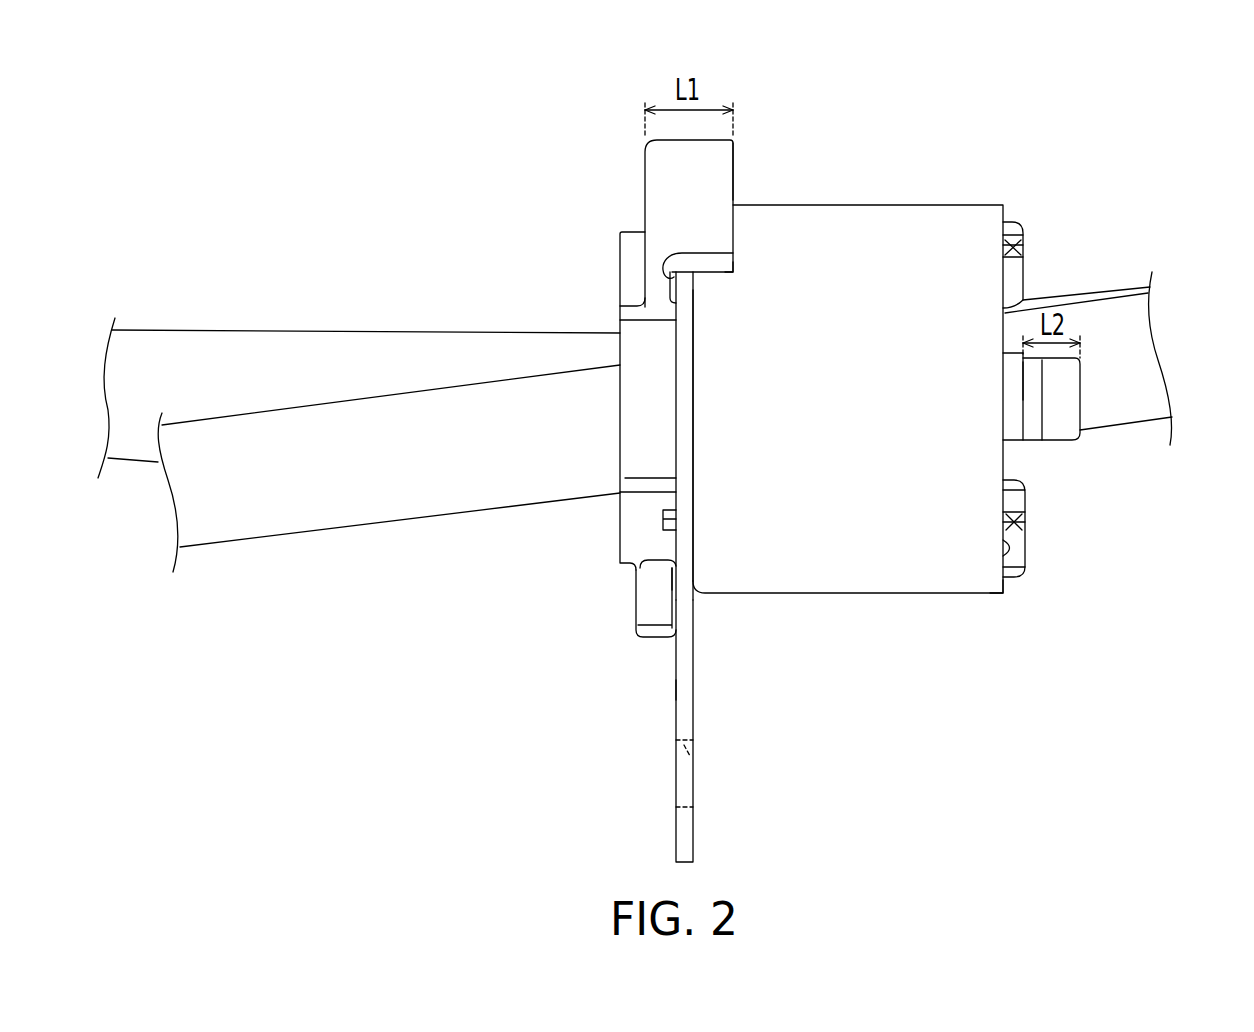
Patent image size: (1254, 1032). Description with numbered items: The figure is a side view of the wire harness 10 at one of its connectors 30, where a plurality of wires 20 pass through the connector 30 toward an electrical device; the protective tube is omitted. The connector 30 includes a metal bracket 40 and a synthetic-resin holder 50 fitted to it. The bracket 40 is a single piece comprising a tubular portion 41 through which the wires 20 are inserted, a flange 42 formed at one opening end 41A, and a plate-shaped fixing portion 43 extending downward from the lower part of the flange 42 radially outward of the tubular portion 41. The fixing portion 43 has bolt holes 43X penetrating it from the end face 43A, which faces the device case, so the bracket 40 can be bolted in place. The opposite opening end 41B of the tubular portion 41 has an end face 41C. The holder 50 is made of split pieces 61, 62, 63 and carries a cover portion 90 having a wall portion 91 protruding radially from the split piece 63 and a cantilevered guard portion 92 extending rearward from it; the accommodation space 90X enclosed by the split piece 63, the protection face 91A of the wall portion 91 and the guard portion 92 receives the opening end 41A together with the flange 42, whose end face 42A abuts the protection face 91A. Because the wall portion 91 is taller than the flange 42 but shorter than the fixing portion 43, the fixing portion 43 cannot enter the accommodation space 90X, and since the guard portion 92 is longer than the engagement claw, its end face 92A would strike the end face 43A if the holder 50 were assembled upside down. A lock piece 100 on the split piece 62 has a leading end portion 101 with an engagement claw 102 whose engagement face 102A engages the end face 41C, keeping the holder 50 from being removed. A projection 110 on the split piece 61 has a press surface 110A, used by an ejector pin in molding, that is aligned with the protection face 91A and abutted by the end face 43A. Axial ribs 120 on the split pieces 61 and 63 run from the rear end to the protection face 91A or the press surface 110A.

The wire harness 10 is at (971, 72).
The wires 20 is at (183, 330).
The connector 30 is at (548, 616).
The bracket 40 is at (676, 663).
The tubular portion 41 is at (876, 431).
The opening end 41A is at (668, 450).
The opening end 41B is at (1005, 548).
The end face 41C is at (1008, 592).
The flange 42 is at (732, 413).
The end face 42A is at (665, 257).
The fixing portion 43 is at (685, 731).
The end face 43A is at (676, 692).
The bolt holes 43X is at (697, 752).
The holder 50 is at (614, 441).
The split piece 61 is at (632, 522).
The split piece 62 is at (632, 420).
The split piece 63 is at (628, 290).
The cover portion 90 is at (556, 200).
The accommodation space 90X is at (734, 272).
The wall portion 91 is at (668, 281).
The protection face 91A is at (683, 290).
The guard portion 92 is at (692, 223).
The end face 92A is at (735, 172).
The lock piece 100 is at (1043, 385).
The leading end portion 101 is at (1082, 440).
The engagement claw 102 is at (996, 426).
The engagement face 102A is at (1022, 400).
The projection 110 is at (705, 609).
The press surface 110A is at (676, 590).
The ribs 120 is at (1018, 238).